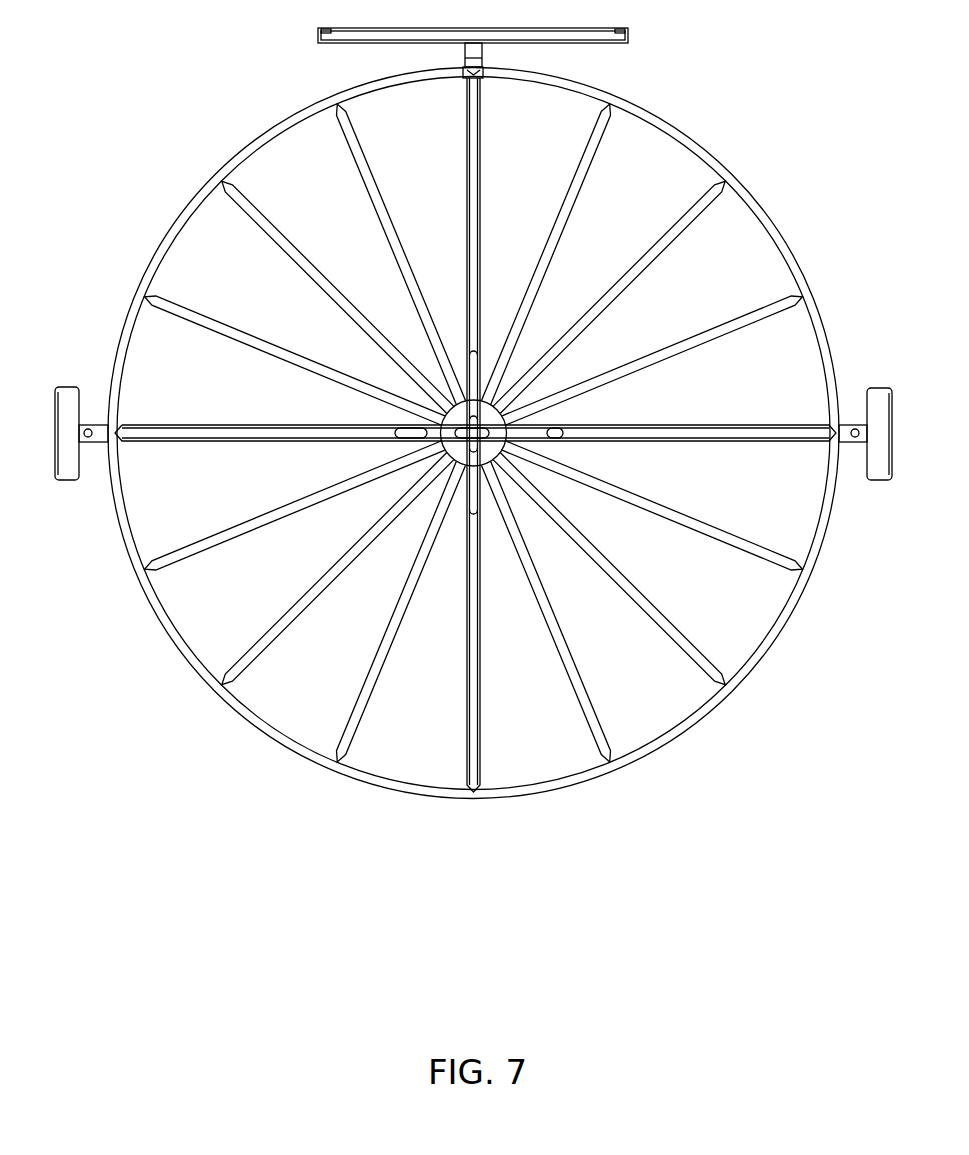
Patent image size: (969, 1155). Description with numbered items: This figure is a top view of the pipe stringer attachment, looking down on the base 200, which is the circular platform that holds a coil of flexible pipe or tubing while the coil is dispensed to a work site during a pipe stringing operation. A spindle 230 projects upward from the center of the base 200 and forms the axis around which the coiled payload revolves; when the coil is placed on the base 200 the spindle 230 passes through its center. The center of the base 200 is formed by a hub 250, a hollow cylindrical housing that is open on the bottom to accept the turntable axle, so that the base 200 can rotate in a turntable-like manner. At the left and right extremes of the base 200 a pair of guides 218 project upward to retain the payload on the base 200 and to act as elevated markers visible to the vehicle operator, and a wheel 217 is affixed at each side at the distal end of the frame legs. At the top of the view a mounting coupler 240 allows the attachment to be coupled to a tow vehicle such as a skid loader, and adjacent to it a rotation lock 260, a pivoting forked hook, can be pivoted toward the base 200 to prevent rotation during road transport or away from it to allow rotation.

The base 200 is at (725, 688).
The wheel 217 is at (64, 403).
The guides 218 is at (86, 437).
The spindle 230 is at (457, 337).
The mounting coupler 240 is at (650, 25).
The hub 250 is at (498, 402).
The rotation lock 260 is at (464, 70).